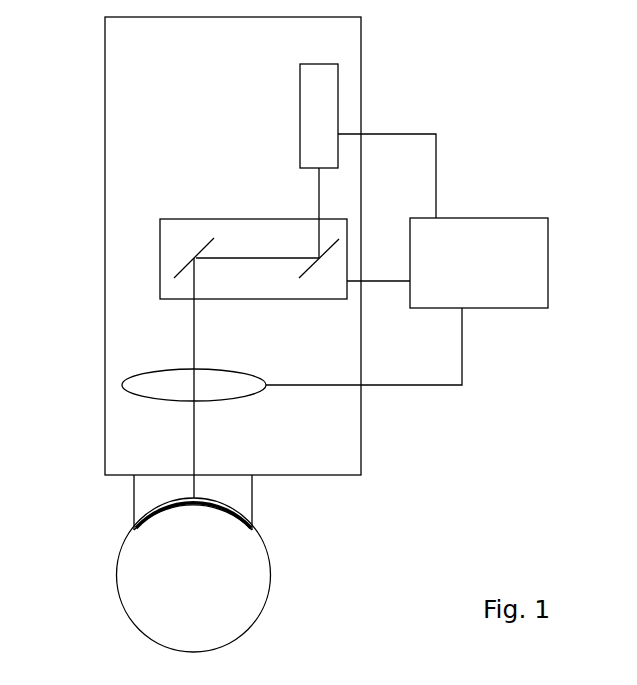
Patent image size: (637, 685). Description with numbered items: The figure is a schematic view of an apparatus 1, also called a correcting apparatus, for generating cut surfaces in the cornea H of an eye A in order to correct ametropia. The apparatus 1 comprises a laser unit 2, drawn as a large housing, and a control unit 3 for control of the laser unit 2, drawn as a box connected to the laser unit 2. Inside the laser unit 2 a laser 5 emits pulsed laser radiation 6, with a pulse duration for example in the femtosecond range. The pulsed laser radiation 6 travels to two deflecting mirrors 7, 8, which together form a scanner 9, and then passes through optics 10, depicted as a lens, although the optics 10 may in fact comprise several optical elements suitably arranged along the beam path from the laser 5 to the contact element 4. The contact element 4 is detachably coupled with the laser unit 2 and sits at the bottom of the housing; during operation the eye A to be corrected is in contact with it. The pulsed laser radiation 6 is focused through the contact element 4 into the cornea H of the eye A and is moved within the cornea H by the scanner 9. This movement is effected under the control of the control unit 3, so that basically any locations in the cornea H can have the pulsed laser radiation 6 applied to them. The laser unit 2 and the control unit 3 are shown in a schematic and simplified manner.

The apparatus 1 is at (88, 296).
The laser unit 2 is at (105, 200).
The control unit 3 is at (548, 283).
The contact element 4 is at (252, 490).
The laser 5 is at (338, 75).
The pulsed laser radiation 6 is at (318, 198).
The deflecting mirror 7 is at (300, 273).
The deflecting mirror 8 is at (197, 238).
The scanner 9 is at (238, 218).
The optics 10 is at (187, 369).
The cornea H is at (252, 528).
The eye A is at (270, 585).